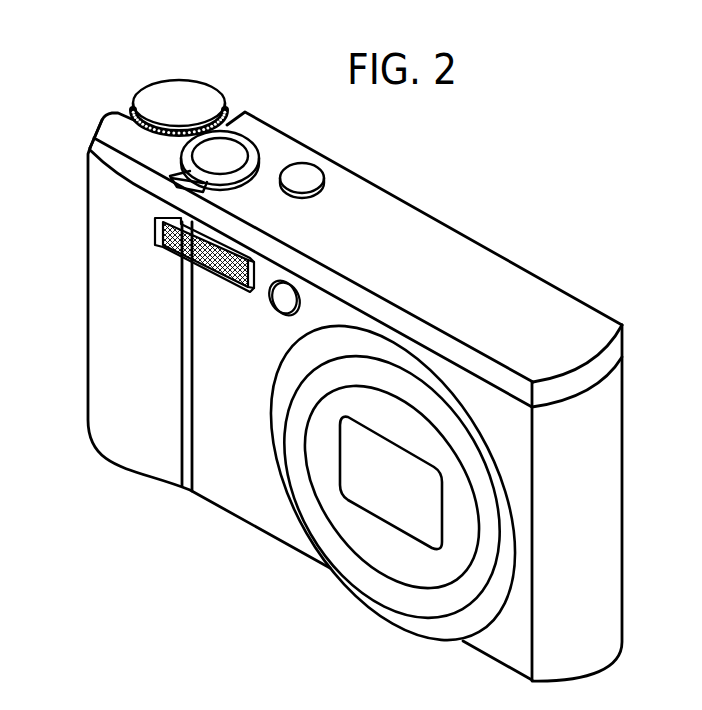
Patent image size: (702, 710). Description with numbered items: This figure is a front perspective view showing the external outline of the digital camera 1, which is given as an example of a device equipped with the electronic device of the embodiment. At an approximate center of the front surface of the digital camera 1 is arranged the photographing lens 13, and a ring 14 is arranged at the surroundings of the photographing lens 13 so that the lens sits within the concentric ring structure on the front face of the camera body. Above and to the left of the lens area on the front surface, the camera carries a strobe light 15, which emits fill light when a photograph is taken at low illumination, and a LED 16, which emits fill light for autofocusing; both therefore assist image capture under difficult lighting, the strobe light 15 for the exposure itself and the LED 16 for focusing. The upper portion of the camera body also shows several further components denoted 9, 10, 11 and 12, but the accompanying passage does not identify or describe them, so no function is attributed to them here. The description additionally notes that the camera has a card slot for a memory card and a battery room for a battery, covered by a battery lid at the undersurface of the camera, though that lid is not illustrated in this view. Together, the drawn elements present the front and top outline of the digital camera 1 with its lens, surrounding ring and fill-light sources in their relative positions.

The digital camera 1 is at (598, 308).
The mode dial 9 is at (158, 93).
The shutter button 10 is at (237, 150).
The zoom lever / top cover 11 is at (180, 172).
The power button 12 is at (308, 174).
The photographing lens 13 is at (355, 473).
The ring 14 is at (507, 550).
The strobe light 15 is at (173, 254).
The LED 16 is at (282, 298).